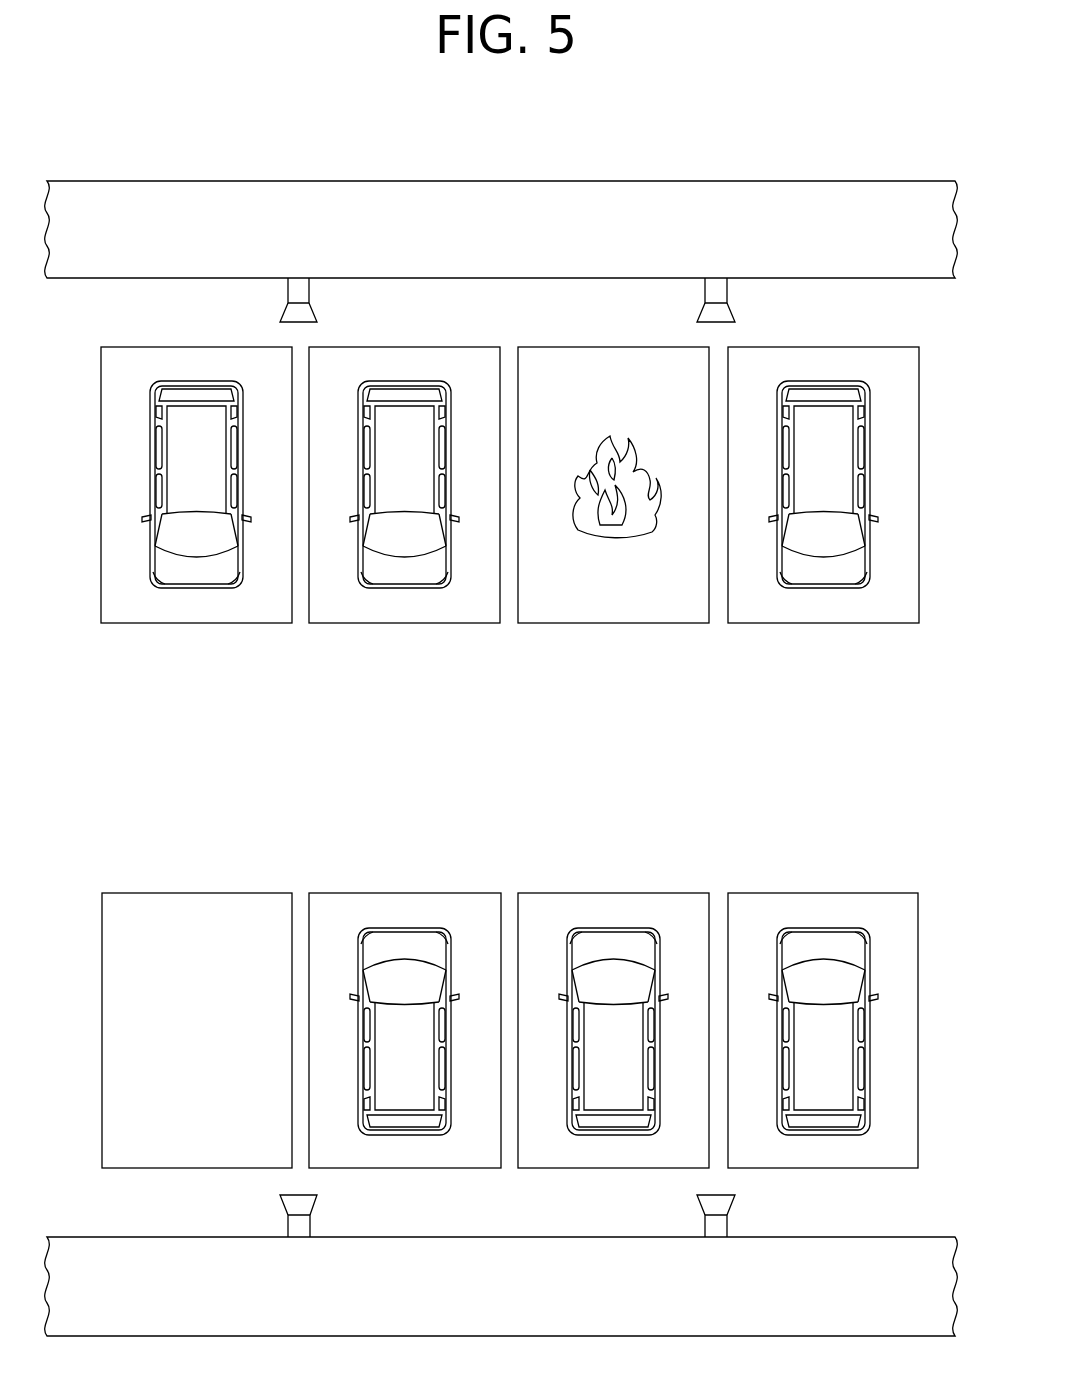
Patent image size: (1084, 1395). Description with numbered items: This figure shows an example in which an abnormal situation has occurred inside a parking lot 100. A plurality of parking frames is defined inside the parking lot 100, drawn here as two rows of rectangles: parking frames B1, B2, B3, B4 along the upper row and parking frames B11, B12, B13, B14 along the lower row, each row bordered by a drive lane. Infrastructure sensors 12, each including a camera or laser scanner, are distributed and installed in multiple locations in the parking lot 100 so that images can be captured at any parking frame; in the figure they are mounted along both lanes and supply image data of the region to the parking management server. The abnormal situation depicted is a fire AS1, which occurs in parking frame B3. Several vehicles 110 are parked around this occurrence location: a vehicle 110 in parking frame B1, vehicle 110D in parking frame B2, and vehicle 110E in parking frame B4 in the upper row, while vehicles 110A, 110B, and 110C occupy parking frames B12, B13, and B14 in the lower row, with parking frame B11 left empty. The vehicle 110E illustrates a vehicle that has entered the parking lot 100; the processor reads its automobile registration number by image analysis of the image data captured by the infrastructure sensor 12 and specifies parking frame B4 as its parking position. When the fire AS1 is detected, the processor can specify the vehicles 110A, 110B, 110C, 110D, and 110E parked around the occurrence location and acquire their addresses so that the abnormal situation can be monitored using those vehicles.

The parking lot 100 is at (872, 158).
The infrastructure sensor 12 is at (288, 290).
The vehicle 110 is at (194, 588).
The vehicle 110A is at (410, 927).
The vehicle 110B is at (620, 927).
The vehicle 110C is at (832, 927).
The vehicle 110D is at (403, 588).
The vehicle 110E is at (822, 588).
The parking frame B1 is at (130, 623).
The parking frame B2 is at (338, 623).
The parking frame B3 is at (572, 623).
The parking frame B4 is at (745, 623).
The parking frame B11 is at (125, 893).
The parking frame B12 is at (338, 893).
The parking frame B13 is at (548, 893).
The parking frame B14 is at (758, 893).
The fire AS1 is at (648, 443).